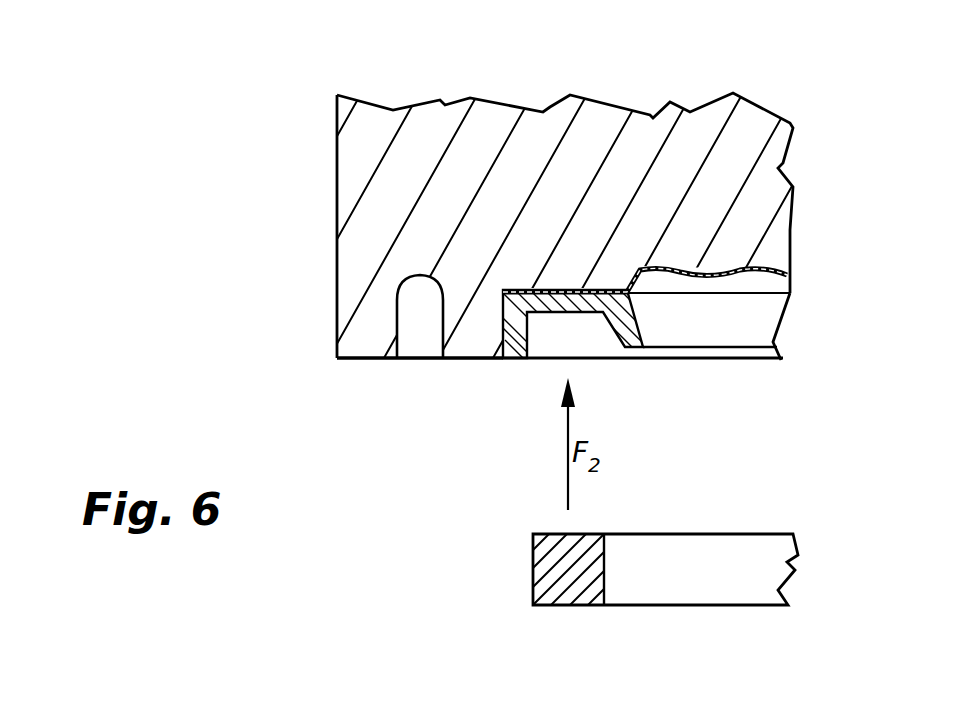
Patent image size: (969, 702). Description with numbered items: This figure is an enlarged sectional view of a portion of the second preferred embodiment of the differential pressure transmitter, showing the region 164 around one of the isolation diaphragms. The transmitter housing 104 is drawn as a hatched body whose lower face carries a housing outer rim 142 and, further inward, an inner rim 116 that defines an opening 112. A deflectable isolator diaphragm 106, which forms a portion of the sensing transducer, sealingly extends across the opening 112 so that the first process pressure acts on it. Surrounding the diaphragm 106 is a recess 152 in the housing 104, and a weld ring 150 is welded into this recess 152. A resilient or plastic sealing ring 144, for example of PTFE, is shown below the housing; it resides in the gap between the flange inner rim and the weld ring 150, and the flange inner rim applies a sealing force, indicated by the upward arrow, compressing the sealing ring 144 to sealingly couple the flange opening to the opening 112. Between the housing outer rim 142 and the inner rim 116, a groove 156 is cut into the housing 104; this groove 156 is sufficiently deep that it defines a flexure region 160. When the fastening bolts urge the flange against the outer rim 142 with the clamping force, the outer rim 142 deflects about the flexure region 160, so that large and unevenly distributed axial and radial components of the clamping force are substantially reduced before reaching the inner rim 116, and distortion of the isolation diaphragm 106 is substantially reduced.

The transmitter housing 104 is at (363, 135).
The assembly 164 is at (442, 88).
The recess 152 is at (547, 292).
The flexure region 160 is at (413, 276).
The housing outer rim 142 is at (372, 335).
The groove 156 is at (415, 340).
The inner rim 116 is at (458, 357).
The weld ring 150 is at (513, 345).
The isolator diaphragm 106 is at (757, 272).
The opening 112 is at (697, 358).
The sealing ring 144 is at (532, 550).